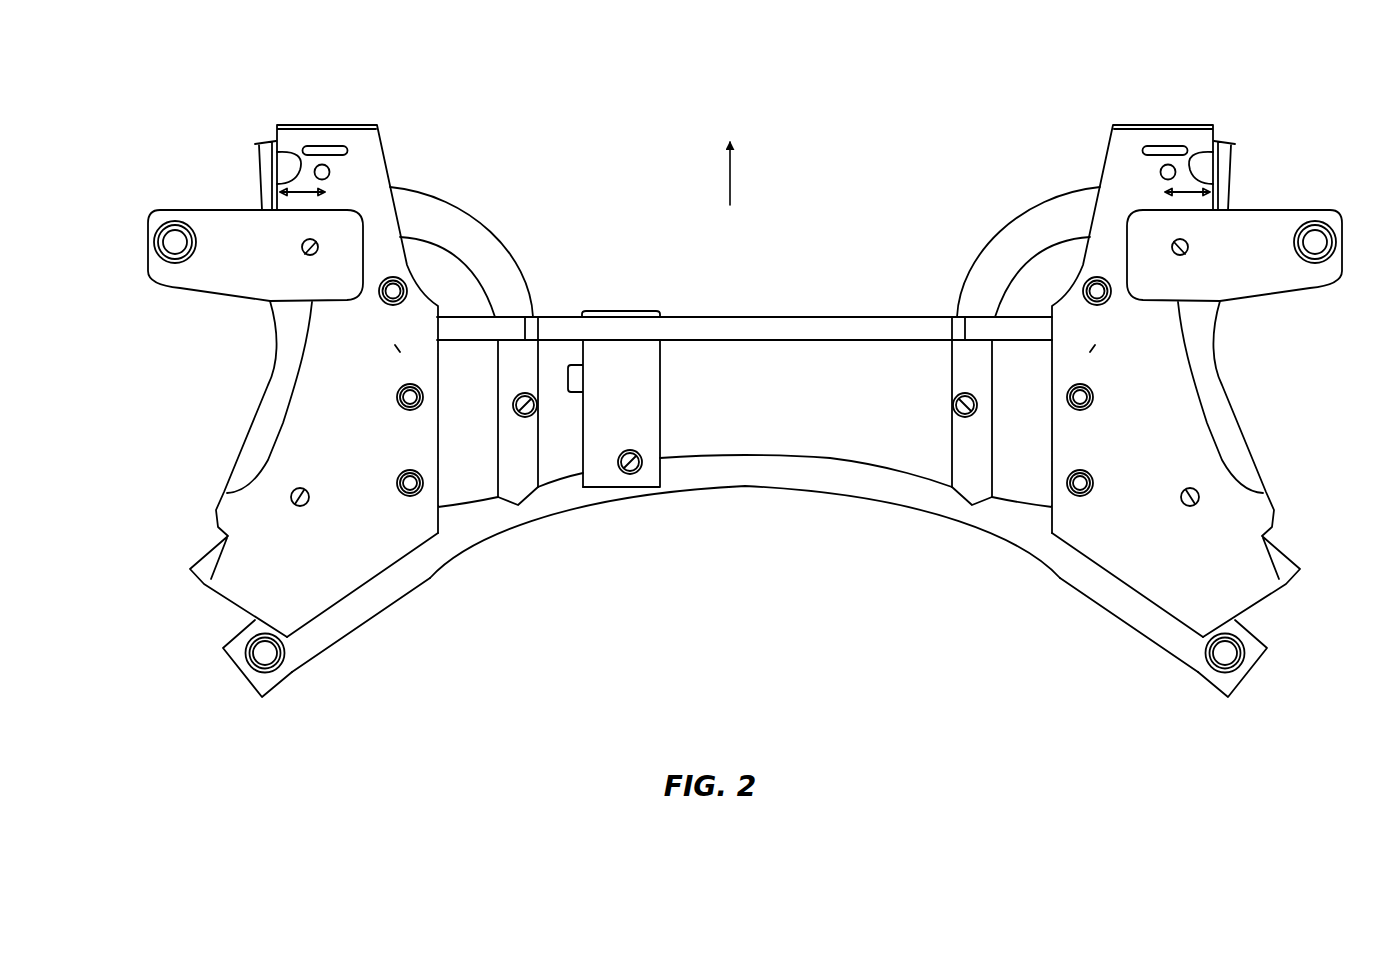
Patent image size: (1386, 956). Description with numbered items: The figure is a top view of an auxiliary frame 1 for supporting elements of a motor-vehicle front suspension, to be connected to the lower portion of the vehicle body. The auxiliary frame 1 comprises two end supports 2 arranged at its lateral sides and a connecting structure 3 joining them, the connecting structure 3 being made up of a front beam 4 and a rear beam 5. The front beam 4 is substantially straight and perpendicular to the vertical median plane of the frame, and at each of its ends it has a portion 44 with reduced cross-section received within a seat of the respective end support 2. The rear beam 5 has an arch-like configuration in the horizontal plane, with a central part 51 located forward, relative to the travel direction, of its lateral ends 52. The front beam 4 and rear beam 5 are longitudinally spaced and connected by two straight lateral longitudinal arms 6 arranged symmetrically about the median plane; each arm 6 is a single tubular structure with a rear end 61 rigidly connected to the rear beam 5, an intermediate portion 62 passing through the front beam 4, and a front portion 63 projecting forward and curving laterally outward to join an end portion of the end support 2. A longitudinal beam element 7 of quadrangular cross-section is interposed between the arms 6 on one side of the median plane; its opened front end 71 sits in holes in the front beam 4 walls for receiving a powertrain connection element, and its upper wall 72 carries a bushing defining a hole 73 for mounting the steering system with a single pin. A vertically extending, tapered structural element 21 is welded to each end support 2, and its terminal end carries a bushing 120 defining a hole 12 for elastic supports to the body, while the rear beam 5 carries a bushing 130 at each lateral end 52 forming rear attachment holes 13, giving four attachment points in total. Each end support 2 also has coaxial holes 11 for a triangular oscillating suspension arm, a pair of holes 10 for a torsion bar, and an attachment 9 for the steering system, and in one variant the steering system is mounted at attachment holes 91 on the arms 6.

The auxiliary frame 1 is at (855, 594).
The end support 2 is at (220, 402).
The connecting structure 3 is at (744, 274).
The front beam 4 is at (833, 316).
The rear beam 5 is at (745, 563).
The central part 51 is at (710, 470).
The lateral ends 52 is at (368, 595).
The lateral longitudinal arm 6 is at (744, 431).
The rear end 61 is at (507, 502).
The intermediate portion 62 is at (498, 370).
The front portion 63 is at (430, 216).
The longitudinal beam element 7 is at (662, 451).
The opened front end 71 is at (623, 309).
The upper wall 72 is at (670, 417).
The hole 73 is at (622, 476).
The attachment 9 is at (386, 300).
The holes 10 is at (398, 400).
The coaxial holes 11 is at (300, 508).
The hole 12 is at (157, 226).
The bushing 120 is at (164, 252).
The hole 13 is at (265, 658).
The bushing 130 is at (250, 640).
The structural element 21 is at (218, 222).
The portion with reduced cross-section 44 is at (463, 318).
The attachment holes 91 is at (513, 407).